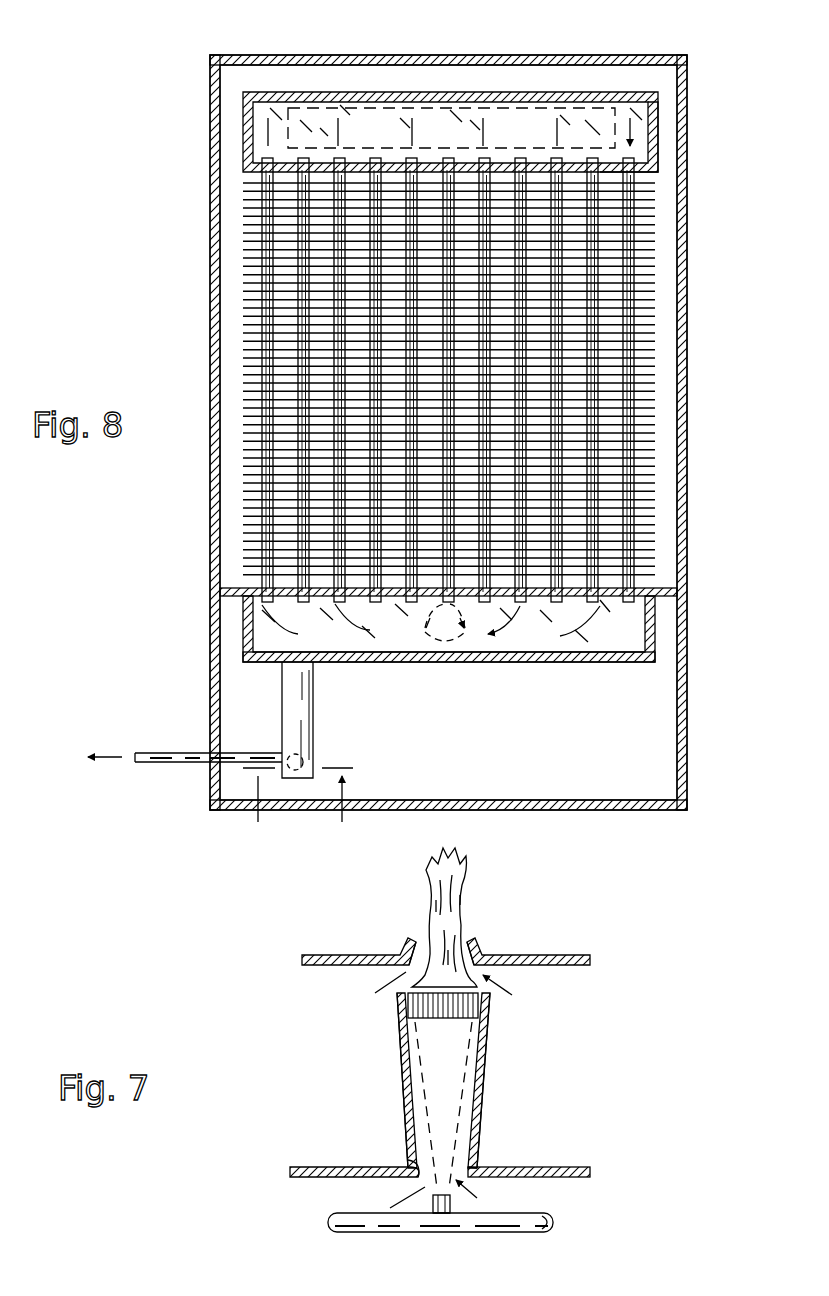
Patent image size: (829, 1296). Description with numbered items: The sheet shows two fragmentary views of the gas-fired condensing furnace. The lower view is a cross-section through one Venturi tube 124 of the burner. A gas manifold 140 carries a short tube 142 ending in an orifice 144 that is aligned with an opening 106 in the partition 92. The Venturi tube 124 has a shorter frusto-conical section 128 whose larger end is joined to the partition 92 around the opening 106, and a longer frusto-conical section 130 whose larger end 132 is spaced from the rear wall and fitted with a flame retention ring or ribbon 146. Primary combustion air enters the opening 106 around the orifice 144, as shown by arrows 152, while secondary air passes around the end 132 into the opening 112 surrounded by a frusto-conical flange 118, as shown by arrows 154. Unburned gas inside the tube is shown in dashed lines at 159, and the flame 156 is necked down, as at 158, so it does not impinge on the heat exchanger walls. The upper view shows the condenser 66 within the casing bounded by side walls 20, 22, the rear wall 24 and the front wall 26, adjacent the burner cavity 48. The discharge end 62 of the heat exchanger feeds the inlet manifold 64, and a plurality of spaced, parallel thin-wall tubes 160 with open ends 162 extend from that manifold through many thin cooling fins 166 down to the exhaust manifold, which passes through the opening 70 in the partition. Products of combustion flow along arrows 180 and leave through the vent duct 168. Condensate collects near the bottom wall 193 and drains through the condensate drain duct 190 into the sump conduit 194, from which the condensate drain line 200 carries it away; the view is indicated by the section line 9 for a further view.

In FIG. 8, the side wall 20 is at (687, 290).
In FIG. 8, the side wall 22 is at (210, 302).
In FIG. 8, the rear wall 24 is at (270, 56).
In FIG. 8, the front wall or access door 26 is at (622, 812).
In FIG. 8, the condenser 66 is at (680, 233).
In FIG. 8, the inlet manifold 64 is at (332, 92).
In FIG. 8, the open end 162 is at (640, 162).
In FIG. 8, the discharge end 62 is at (522, 108).
In FIG. 8, the arrows 180 is at (412, 125).
In FIG. 8, the tubes 160 is at (600, 348).
In FIG. 8, the cooling fins 166 is at (655, 442).
In FIG. 8, the opening 70 is at (655, 592).
In FIG. 8, the bottom wall 193 is at (470, 664).
In FIG. 8, the vent duct 168 is at (443, 640).
In FIG. 8, the burner cavity 48 is at (590, 704).
In FIG. 8, the condensate drain duct 190 is at (314, 697).
In FIG. 8, the conduit 194 is at (304, 752).
In FIG. 8, the condensate drain line 200 is at (168, 752).
In FIG. 8, the air inlet arrows 9 is at (298, 810).
In FIG. 7, the frusto-conical flange 118 is at (400, 945).
In FIG. 7, the opening 112 is at (417, 955).
In FIG. 7, the flame 156 is at (468, 874).
In FIG. 7, the necked-down portion of flame 158 is at (460, 942).
In FIG. 7, the arrows 154 is at (392, 982).
In FIG. 7, the larger end 132 is at (400, 998).
In FIG. 7, the flame retention ring or ribbon 146 is at (475, 1010).
In FIG. 7, the longer frusto-conical section 130 is at (484, 1055).
In FIG. 7, the Venturi tube 124 is at (400, 1085).
In FIG. 7, the unburned gas 159 is at (450, 1098).
In FIG. 7, the partition 92 is at (560, 1175).
In FIG. 7, the opening 106 is at (410, 1166).
In FIG. 7, the shorter frusto-conical section 128 is at (472, 1165).
In FIG. 7, the arrows 152 is at (402, 1198).
In FIG. 7, the orifice 144 is at (452, 1200).
In FIG. 7, the short tube 142 is at (433, 1213).
In FIG. 7, the gas manifold 140 is at (465, 1232).